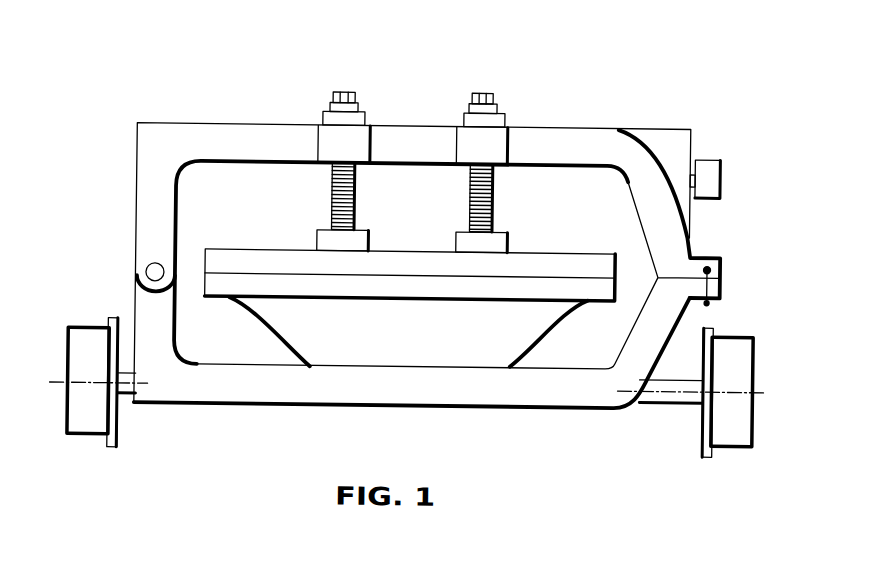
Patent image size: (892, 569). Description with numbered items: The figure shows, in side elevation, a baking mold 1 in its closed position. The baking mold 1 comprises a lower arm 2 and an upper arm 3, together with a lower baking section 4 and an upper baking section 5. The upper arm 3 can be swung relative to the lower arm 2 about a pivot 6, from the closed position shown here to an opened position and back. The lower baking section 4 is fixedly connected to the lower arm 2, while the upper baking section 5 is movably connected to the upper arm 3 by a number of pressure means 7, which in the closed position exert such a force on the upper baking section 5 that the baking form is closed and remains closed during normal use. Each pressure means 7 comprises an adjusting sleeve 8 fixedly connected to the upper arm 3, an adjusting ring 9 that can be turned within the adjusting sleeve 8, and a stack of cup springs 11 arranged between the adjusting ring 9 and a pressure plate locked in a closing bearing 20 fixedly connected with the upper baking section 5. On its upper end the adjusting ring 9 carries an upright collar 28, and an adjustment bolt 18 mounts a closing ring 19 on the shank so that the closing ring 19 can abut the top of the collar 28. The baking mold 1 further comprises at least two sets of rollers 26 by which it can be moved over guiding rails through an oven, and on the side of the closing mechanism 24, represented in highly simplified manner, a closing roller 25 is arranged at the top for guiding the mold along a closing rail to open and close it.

The baking mold 1 is at (428, 207).
The lower arm 2 is at (211, 398).
The upper arm 3 is at (213, 157).
The lower baking section 4 is at (578, 291).
The upper baking section 5 is at (577, 261).
The pivot 6 is at (146, 273).
The pressure means 7 is at (415, 71).
The adjusting sleeve 8 is at (331, 156).
The adjusting ring 9 is at (318, 121).
The cup springs 11 is at (352, 194).
The adjustment bolt 18 is at (341, 93).
The closing ring 19 is at (328, 99).
The closing bearing 20 is at (460, 245).
The closing mechanism 24 is at (707, 301).
The closing roller 25 is at (707, 167).
The rollers 26 is at (85, 427).
The collar 28 is at (321, 113).